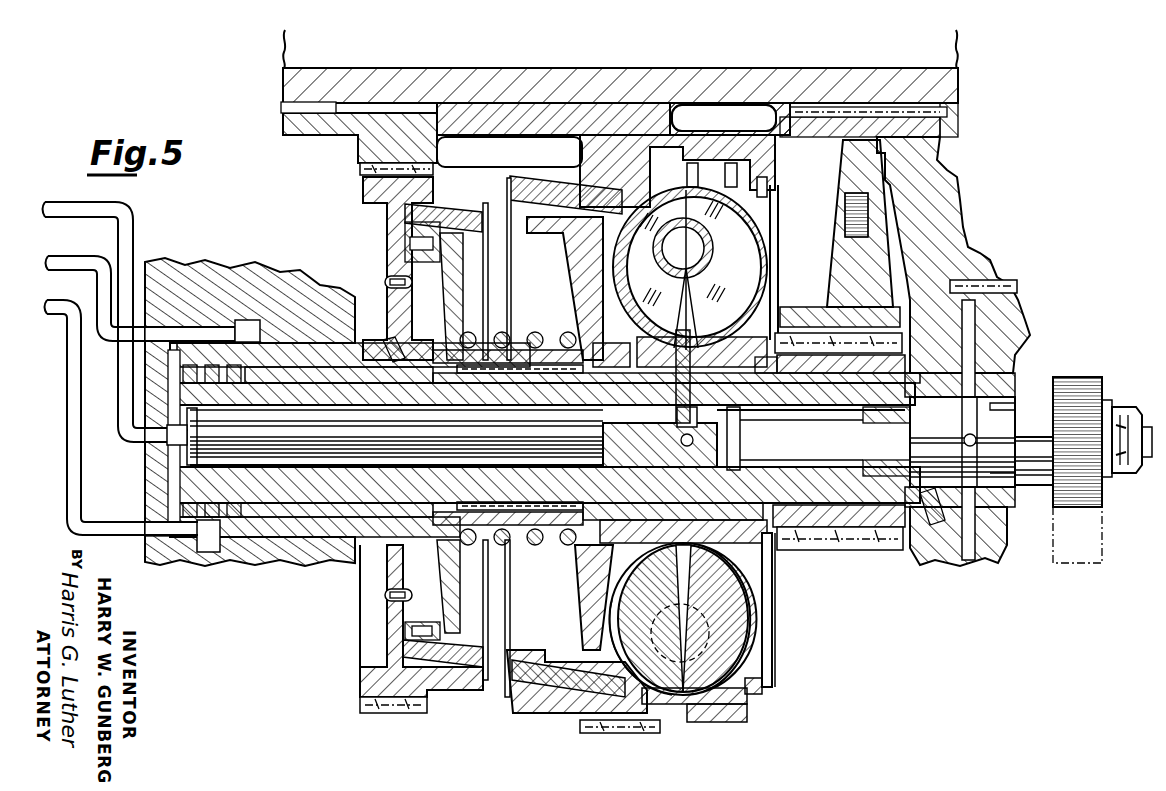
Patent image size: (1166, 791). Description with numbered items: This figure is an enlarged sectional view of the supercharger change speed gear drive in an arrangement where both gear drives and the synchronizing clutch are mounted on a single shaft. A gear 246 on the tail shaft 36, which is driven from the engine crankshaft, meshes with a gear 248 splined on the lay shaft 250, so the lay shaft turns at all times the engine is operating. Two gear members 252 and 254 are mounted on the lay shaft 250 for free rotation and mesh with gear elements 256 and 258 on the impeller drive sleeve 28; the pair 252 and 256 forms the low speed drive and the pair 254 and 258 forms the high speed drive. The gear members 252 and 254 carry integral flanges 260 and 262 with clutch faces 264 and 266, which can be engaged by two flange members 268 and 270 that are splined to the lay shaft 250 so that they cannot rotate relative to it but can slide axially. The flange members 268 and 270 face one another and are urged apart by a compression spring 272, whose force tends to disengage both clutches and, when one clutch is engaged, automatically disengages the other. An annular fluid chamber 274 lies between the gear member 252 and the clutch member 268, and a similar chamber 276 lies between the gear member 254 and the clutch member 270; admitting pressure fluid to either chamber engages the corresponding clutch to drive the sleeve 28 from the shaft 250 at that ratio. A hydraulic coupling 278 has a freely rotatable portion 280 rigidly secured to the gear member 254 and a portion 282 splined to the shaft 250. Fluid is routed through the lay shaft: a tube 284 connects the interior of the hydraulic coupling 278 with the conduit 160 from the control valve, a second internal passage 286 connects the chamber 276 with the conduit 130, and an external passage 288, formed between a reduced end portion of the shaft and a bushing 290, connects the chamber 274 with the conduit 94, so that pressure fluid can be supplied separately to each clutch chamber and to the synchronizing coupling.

The impeller drive sleeve 28 is at (305, 137).
The tail shaft 36 is at (960, 71).
The conduit 94 is at (89, 258).
The conduit 130 is at (59, 292).
The conduit 160 is at (79, 203).
The gear 246 is at (820, 302).
The gear 248 is at (857, 546).
The lay shaft 250 is at (918, 378).
The gear member 252 is at (372, 183).
The gear member 254 is at (578, 166).
The gear element 256 is at (356, 138).
The gear element 258 is at (685, 160).
The integral flange 260 is at (443, 683).
The integral flange 262 is at (567, 712).
The clutch face 264 is at (410, 670).
The clutch face 266 is at (533, 704).
The flange member 268 is at (408, 582).
The flange member 270 is at (588, 578).
The compression spring 272 is at (581, 548).
The annular fluid chamber 274 is at (421, 542).
The fluid chamber 276 is at (600, 602).
The hydraulic coupling 278 is at (762, 663).
The freely rotatable portion 280 is at (772, 618).
The portion 282 is at (762, 576).
The tube 284 is at (316, 448).
The internal passage 286 is at (240, 570).
The external passage 288 is at (310, 348).
The bushing 290 is at (283, 314).